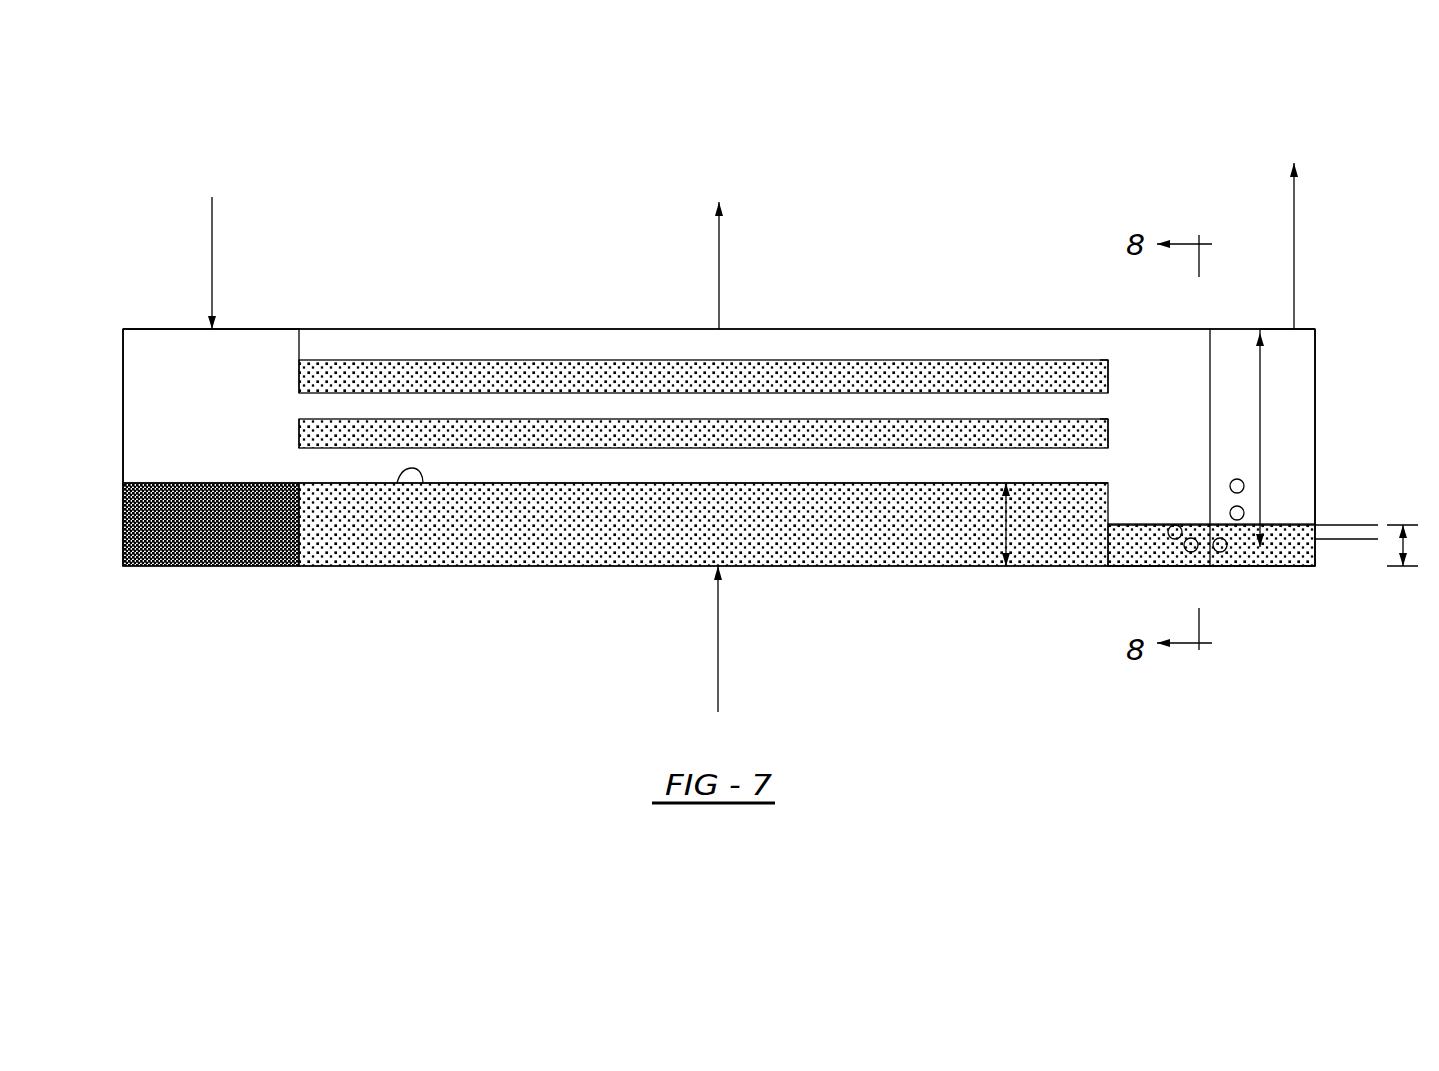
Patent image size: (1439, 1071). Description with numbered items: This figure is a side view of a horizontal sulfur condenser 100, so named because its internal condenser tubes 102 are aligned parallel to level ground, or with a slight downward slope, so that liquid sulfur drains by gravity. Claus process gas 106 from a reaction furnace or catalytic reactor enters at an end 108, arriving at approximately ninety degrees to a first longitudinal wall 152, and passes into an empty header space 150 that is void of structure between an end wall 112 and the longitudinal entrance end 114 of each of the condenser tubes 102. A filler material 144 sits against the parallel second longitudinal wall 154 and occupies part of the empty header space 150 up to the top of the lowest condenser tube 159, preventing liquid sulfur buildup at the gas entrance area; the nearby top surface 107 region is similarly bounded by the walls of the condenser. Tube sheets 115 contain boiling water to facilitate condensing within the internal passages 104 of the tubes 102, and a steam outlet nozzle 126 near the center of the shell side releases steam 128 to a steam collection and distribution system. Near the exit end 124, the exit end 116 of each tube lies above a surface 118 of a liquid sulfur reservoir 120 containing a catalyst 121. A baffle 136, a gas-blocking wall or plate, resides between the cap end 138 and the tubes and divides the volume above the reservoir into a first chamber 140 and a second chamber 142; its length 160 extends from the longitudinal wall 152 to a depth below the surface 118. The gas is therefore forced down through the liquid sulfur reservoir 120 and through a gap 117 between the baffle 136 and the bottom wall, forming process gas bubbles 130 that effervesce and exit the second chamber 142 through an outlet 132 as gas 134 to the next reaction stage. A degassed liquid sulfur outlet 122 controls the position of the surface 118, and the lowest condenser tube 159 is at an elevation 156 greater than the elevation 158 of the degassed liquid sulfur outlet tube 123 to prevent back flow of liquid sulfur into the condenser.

The horizontal sulfur condenser 100 is at (378, 171).
The condenser tubes 102 is at (453, 483).
The internal passages 104 is at (945, 468).
The Claus process gas 106 is at (212, 233).
The top surface 107 is at (215, 329).
The end 108 is at (161, 322).
The end wall 112 is at (123, 345).
The longitudinal entrance end 114 is at (300, 483).
The tube sheets 115 is at (300, 378).
The exit end 116 is at (1108, 483).
The gap 117 is at (1215, 567).
The surface 118 is at (1132, 525).
The liquid sulfur reservoir 120 is at (1293, 545).
The catalyst 121 is at (1277, 550).
The degassed liquid sulfur outlet 122 is at (1315, 539).
The degassed liquid sulfur outlet tube 123 is at (1352, 525).
The end 124 is at (1340, 352).
The steam outlet nozzle 126 is at (719, 329).
The steam 128 is at (719, 255).
The process gas bubbles 130 is at (1196, 552).
The outlet 132 is at (1262, 370).
The gas 134 is at (1294, 197).
The baffle 136 is at (1212, 360).
The end 138 is at (1297, 362).
The first chamber 140 is at (1205, 411).
The second chamber 142 is at (1310, 435).
The filler material 144 is at (197, 545).
The empty header space 150 is at (262, 425).
The first longitudinal wall 152 is at (663, 329).
The second longitudinal wall 154 is at (203, 483).
The elevation or distance 156 is at (1005, 512).
The elevation or distance 158 is at (1403, 545).
The lowest condenser tube 159 is at (423, 483).
The length 160 is at (1300, 358).